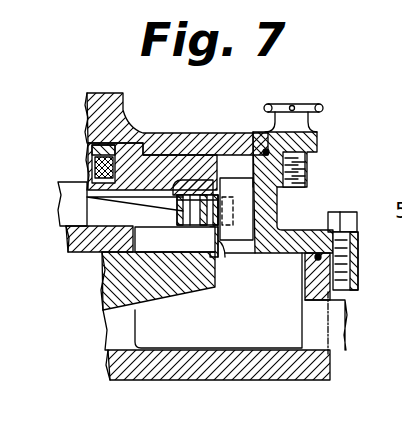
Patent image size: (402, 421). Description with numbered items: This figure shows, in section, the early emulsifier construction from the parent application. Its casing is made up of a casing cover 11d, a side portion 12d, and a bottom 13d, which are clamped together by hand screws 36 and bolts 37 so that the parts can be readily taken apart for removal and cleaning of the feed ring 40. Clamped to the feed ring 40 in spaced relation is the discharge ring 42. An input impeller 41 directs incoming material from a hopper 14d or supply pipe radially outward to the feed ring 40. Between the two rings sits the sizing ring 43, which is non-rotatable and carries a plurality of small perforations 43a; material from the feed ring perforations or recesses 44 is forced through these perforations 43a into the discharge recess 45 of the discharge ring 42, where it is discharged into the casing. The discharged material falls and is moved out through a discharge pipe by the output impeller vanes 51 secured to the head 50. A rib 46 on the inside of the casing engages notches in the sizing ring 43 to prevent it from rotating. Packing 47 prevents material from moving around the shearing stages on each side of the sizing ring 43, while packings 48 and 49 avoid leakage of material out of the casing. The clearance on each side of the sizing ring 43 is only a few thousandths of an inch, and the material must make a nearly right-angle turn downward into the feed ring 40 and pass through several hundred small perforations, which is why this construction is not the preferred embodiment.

The casing cover 11d is at (266, 151).
The side portion 12d is at (263, 211).
The bottom 13d is at (312, 366).
The hopper 14d is at (110, 106).
The hand screws 36 is at (294, 122).
The bolts 37 is at (340, 221).
The feed ring 40 is at (68, 252).
The input impeller 41 is at (72, 208).
The discharge ring 42 is at (148, 170).
The sizing ring 43 is at (87, 197).
The perforations 43a is at (175, 240).
The feed ring perforations or recesses 44 is at (216, 246).
The discharge recess 45 is at (197, 190).
The rib 46 is at (236, 192).
The packing 47 is at (93, 165).
The packing 48 is at (266, 106).
The packing 49 is at (318, 256).
The head 50 is at (178, 283).
The output impeller vanes 51 is at (267, 337).